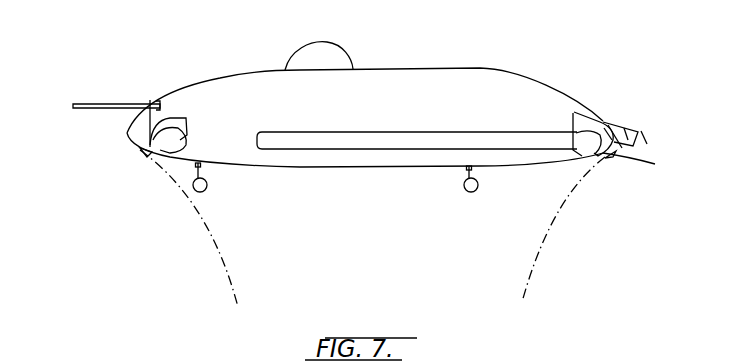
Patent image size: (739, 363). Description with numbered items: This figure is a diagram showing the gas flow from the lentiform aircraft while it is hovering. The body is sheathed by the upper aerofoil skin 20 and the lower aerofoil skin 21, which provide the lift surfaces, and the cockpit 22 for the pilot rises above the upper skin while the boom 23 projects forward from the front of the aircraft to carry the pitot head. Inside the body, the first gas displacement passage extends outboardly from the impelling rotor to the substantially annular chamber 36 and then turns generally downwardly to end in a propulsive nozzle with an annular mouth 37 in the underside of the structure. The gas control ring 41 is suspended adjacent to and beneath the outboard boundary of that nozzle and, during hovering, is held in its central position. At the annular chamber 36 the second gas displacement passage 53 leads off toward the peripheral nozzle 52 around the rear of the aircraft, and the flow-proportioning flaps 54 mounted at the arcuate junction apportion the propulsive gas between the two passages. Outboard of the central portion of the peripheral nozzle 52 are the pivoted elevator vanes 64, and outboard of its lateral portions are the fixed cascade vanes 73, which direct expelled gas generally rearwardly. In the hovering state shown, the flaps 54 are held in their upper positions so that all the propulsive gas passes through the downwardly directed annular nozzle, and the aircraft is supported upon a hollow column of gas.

The upper aerofoil skin 20 is at (513, 68).
The lower aerofoil skin 21 is at (386, 166).
The cockpit 22 is at (310, 48).
The boom 23 is at (113, 102).
The annular chamber 36 is at (177, 127).
The annular mouth 37 is at (150, 137).
The gas control ring 41 is at (612, 155).
The peripheral nozzle 52 is at (637, 132).
The second gas displacement passage 53 is at (605, 125).
The flaps 54 is at (608, 127).
The elevator vanes 64 is at (641, 143).
The fixed cascade vanes 73 is at (300, 143).